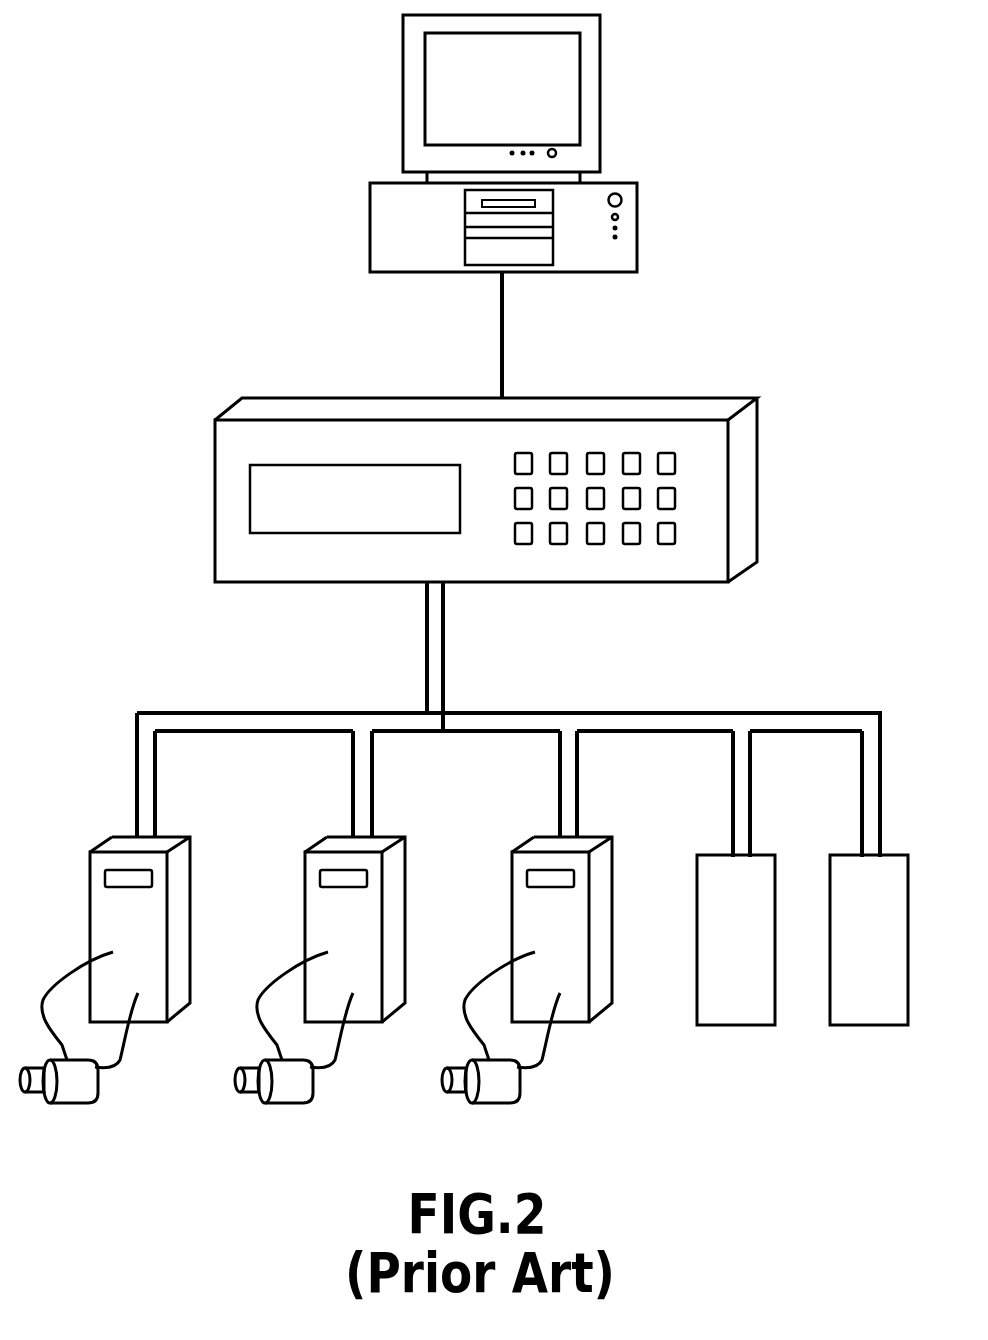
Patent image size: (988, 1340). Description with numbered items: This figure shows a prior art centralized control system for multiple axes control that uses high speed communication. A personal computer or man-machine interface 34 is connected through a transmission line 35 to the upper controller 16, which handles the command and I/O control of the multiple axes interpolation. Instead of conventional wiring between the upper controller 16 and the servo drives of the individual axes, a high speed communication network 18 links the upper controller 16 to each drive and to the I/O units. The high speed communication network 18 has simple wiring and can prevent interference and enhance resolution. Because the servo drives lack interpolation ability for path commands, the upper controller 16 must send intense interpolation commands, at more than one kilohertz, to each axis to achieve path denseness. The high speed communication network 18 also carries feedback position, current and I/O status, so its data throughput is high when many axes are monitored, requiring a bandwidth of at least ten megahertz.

The upper controller 16 is at (740, 480).
The high speed communication network 18 is at (672, 715).
The personal computer 34 is at (630, 224).
The transmission line 35 is at (503, 335).